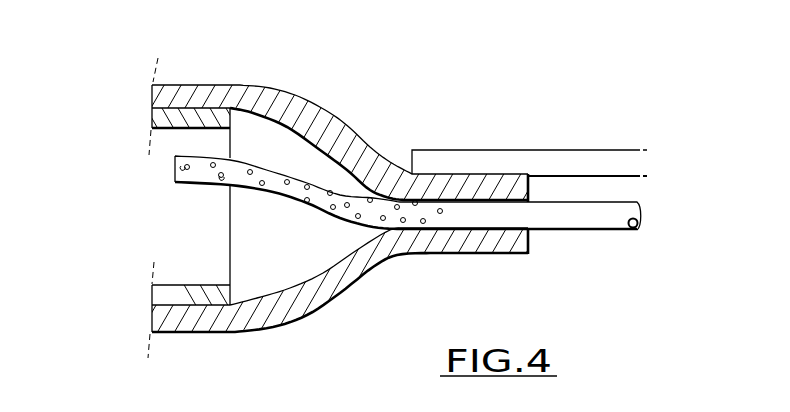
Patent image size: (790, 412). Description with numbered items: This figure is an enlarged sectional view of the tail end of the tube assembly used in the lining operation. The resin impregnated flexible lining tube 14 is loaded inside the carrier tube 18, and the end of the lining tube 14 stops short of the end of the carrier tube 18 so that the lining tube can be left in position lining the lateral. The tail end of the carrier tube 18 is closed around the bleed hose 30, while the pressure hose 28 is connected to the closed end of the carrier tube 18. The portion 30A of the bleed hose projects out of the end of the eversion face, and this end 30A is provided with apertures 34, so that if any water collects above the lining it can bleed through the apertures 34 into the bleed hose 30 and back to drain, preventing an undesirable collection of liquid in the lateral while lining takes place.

The lining tube 14 is at (178, 120).
The carrier tube 18 is at (355, 148).
The pressure hose 28 is at (547, 160).
The bleed hose 30 is at (598, 222).
The end portion of bleed hose 30A is at (187, 182).
The apertures 34 is at (183, 168).